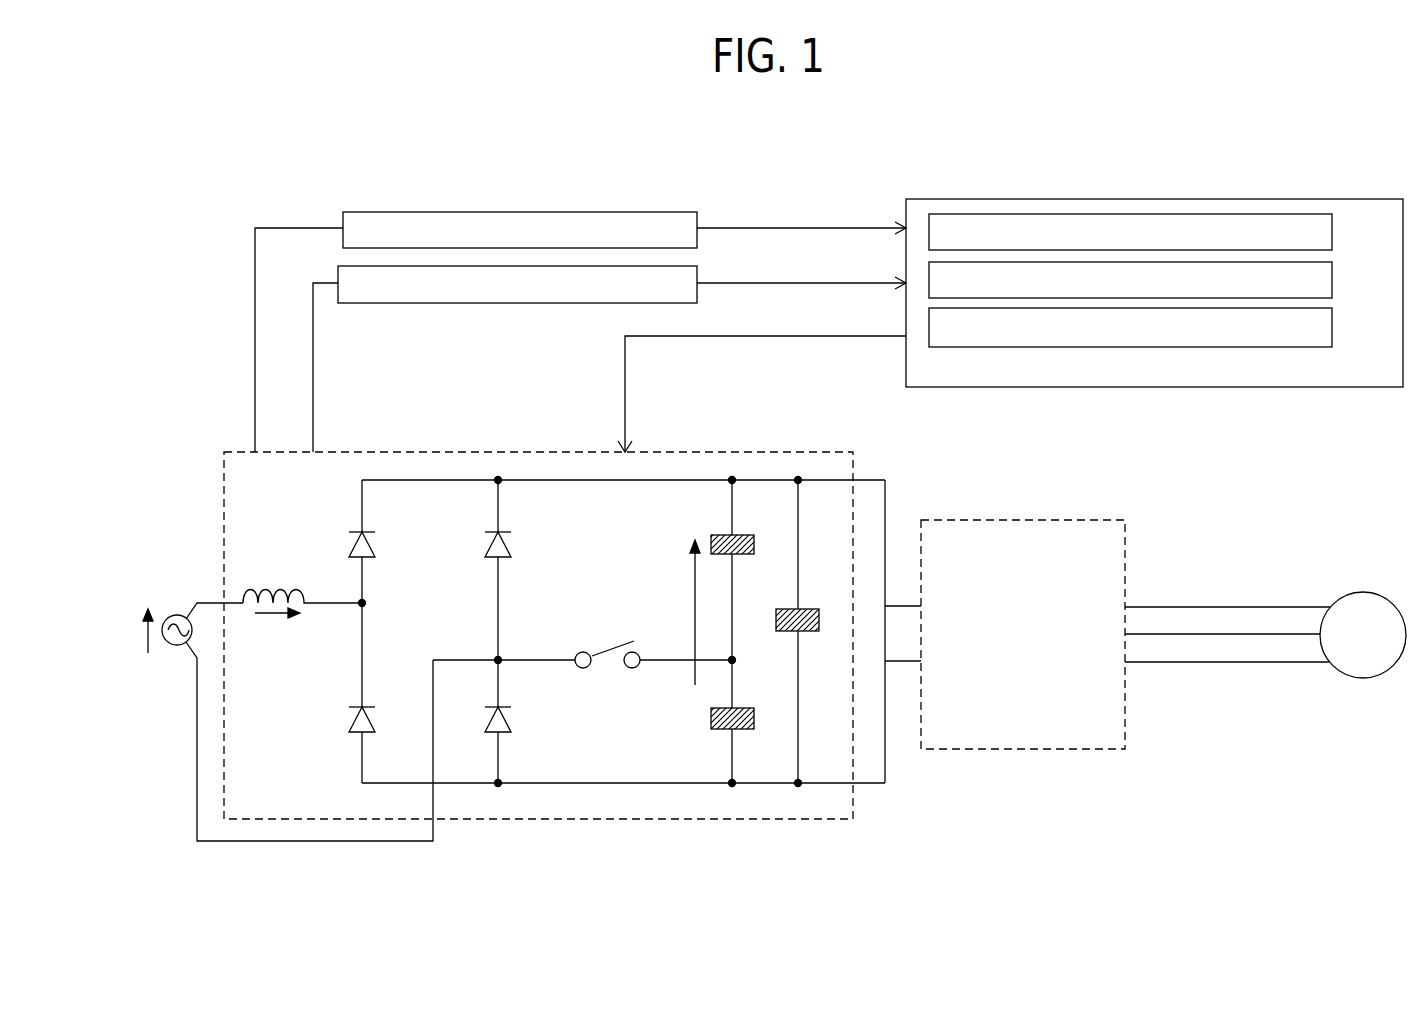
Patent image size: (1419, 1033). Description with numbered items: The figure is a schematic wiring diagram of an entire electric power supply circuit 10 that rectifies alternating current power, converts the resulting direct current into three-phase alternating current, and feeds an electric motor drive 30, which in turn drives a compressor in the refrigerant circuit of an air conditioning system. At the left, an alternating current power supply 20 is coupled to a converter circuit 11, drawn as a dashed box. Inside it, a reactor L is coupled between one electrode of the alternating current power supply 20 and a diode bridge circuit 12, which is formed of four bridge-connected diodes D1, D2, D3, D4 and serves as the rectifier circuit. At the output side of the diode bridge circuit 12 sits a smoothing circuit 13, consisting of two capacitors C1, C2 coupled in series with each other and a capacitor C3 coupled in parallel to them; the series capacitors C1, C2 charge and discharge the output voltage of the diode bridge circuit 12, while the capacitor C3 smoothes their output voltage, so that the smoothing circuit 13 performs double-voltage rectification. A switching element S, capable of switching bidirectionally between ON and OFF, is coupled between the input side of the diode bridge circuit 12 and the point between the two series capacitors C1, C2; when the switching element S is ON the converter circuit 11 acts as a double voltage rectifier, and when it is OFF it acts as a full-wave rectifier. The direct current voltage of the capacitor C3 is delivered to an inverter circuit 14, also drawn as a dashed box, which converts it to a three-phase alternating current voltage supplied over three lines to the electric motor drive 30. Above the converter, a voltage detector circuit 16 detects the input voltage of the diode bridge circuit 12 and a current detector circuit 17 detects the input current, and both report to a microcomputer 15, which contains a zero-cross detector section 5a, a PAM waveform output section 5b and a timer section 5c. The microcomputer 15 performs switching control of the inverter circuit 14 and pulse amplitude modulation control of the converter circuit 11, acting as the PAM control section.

The electric power supply circuit 10 is at (699, 179).
The converter circuit 11 is at (345, 452).
The diode bridge circuit 12 is at (617, 588).
The smoothing circuit 13 is at (752, 586).
The inverter circuit 14 is at (1052, 520).
The microcomputer 15 is at (1010, 290).
The voltage detector circuit 16 is at (476, 211).
The current detector circuit 17 is at (469, 304).
The alternating current power supply 20 is at (189, 645).
The electric motor drive 30 is at (1360, 592).
The zero-cross detector section 5a is at (1333, 237).
The PAM waveform output section 5b is at (1333, 284).
The timer section 5c is at (1333, 331).
The reactor L is at (280, 592).
The switching element S is at (615, 646).
The diode D1 is at (373, 543).
The diode D2 is at (366, 733).
The diode D3 is at (490, 560).
The diode D4 is at (490, 733).
The capacitor C1 is at (744, 535).
The capacitor C2 is at (742, 729).
The capacitor C3 is at (809, 609).